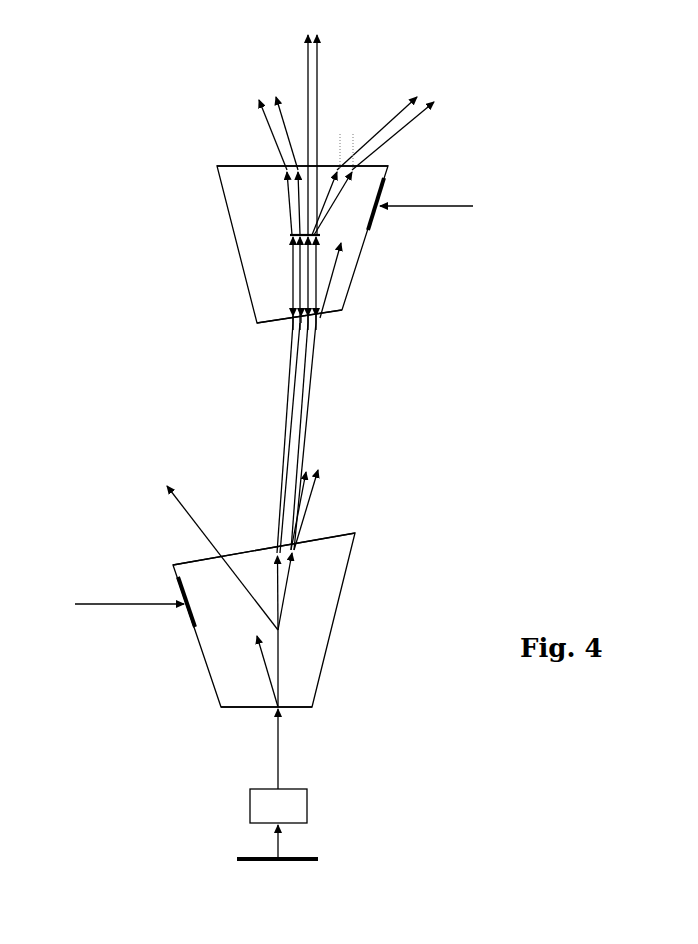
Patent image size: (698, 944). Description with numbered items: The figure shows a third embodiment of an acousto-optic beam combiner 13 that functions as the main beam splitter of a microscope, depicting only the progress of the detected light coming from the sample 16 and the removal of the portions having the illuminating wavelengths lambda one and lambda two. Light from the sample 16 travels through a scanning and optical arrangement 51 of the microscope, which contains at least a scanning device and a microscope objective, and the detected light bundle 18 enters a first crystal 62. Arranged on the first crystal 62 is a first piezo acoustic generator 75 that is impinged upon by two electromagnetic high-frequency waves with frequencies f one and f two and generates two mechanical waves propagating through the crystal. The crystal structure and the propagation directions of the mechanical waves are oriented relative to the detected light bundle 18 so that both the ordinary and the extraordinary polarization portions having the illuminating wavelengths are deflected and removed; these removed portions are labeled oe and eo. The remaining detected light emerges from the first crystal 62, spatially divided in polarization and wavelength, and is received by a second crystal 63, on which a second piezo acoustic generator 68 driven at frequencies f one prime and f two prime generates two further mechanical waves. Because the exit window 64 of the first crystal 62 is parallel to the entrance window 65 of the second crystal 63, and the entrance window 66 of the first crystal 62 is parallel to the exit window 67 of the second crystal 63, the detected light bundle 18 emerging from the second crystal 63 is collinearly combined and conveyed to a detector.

The acousto-optic beam combiner 13 is at (559, 264).
The sample 16 is at (302, 857).
The detected light bundle 18 is at (331, 57).
The scanning and optical arrangement 51 is at (298, 798).
The first crystal 62 is at (322, 618).
The second crystal 63 is at (253, 232).
The exit window of first crystal 64 is at (241, 709).
The entrance window of second crystal 65 is at (235, 165).
The entrance window of first crystal 66 is at (334, 532).
The exit window of second crystal 67 is at (327, 310).
The second piezo acoustic generator 68 is at (387, 190).
The first piezo acoustic generator 75 is at (173, 587).